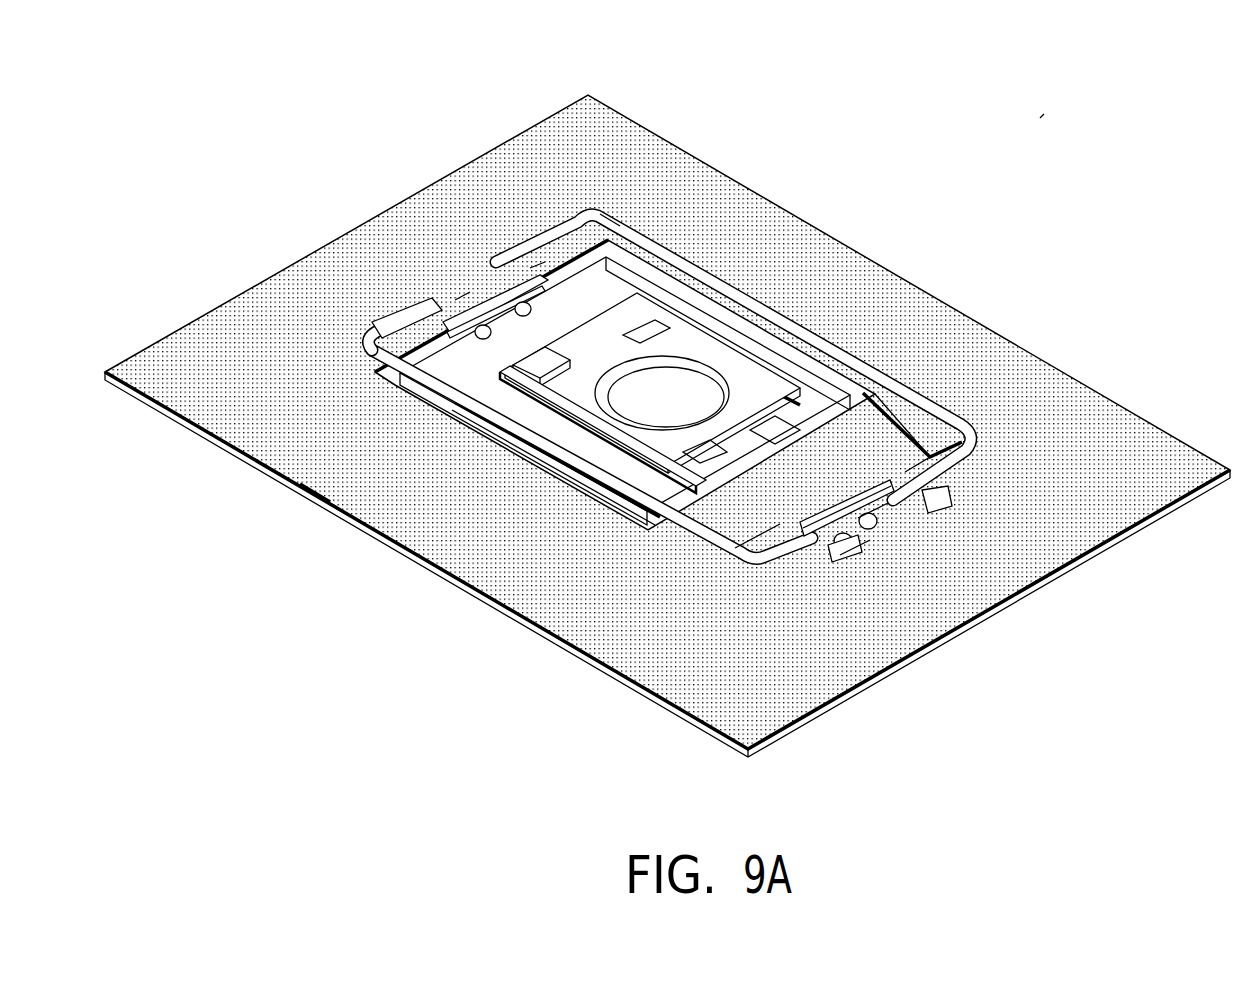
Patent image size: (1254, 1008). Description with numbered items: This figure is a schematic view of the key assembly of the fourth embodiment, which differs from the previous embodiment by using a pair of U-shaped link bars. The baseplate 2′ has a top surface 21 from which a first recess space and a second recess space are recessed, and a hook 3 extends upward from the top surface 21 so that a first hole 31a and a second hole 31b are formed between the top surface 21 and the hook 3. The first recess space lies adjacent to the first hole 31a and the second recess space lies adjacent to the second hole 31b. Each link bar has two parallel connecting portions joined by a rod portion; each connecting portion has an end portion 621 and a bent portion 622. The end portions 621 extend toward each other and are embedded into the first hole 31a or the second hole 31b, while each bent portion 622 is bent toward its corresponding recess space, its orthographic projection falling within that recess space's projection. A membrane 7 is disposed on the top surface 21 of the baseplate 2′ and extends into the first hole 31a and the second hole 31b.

The baseplate 2′ is at (487, 598).
The top surface 21 is at (440, 565).
The hook 3 is at (876, 478).
The first hole 31a is at (860, 550).
The second hole 31b is at (868, 512).
The end portion 621 is at (482, 266).
The bent portion 622 is at (512, 262).
The membrane 7 is at (343, 492).